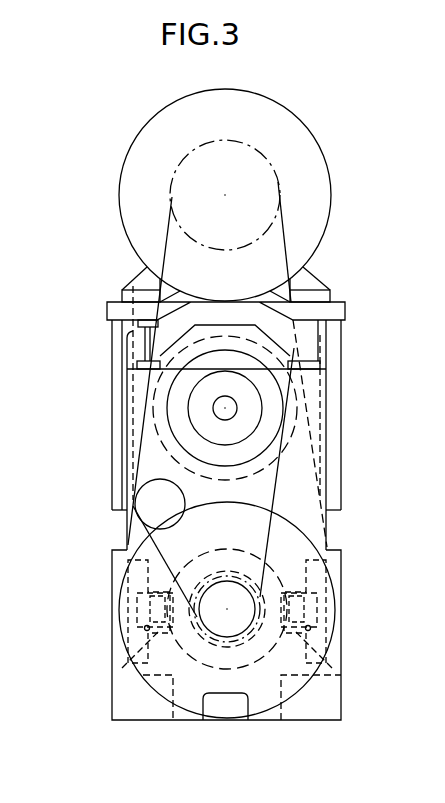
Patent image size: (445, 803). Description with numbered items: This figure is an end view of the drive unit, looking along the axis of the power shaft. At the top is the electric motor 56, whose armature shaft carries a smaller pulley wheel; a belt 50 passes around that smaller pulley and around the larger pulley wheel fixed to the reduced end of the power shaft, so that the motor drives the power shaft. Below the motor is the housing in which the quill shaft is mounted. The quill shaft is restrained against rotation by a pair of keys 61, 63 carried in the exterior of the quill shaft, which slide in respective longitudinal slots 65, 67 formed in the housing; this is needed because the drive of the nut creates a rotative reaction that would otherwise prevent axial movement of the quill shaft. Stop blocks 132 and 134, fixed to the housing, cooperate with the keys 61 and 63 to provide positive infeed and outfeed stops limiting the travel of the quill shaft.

The electric motor 56 is at (331, 195).
The belt 50 is at (288, 248).
The stop block 134 is at (316, 544).
The key 63 is at (330, 588).
The longitudinal slot 67 is at (320, 634).
The stop block 132 is at (125, 576).
The key 61 is at (118, 612).
The longitudinal slot 65 is at (153, 690).